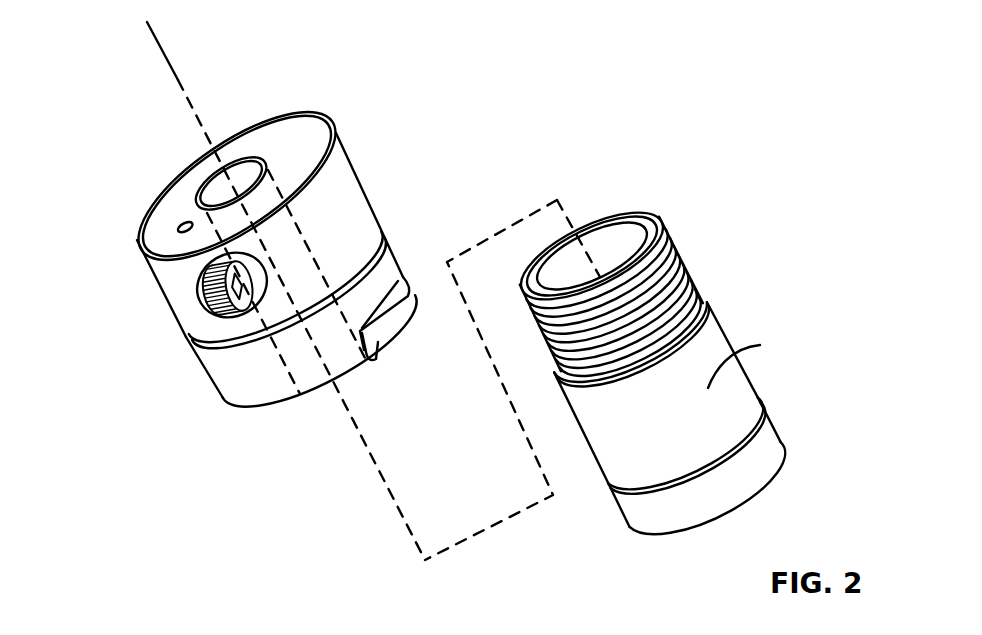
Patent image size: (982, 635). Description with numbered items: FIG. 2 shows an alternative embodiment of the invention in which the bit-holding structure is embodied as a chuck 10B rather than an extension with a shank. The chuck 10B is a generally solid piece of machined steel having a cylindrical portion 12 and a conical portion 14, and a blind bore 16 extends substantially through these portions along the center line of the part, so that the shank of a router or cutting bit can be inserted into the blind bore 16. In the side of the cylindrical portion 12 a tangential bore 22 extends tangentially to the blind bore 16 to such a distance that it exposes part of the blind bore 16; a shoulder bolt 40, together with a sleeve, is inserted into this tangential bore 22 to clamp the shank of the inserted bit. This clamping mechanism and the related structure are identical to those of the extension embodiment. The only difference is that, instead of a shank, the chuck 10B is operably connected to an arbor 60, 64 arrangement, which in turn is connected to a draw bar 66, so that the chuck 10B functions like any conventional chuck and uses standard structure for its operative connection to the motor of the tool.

The chuck 10B is at (350, 166).
The cylindrical portion 12 is at (358, 202).
The conical portion 14 is at (358, 273).
The blind bore 16 is at (250, 176).
The tangential bore 22 is at (212, 307).
The shoulder bolt 40 is at (213, 314).
The arbor 60 is at (247, 385).
The arbor 64 is at (693, 347).
The draw bar 66 is at (653, 508).